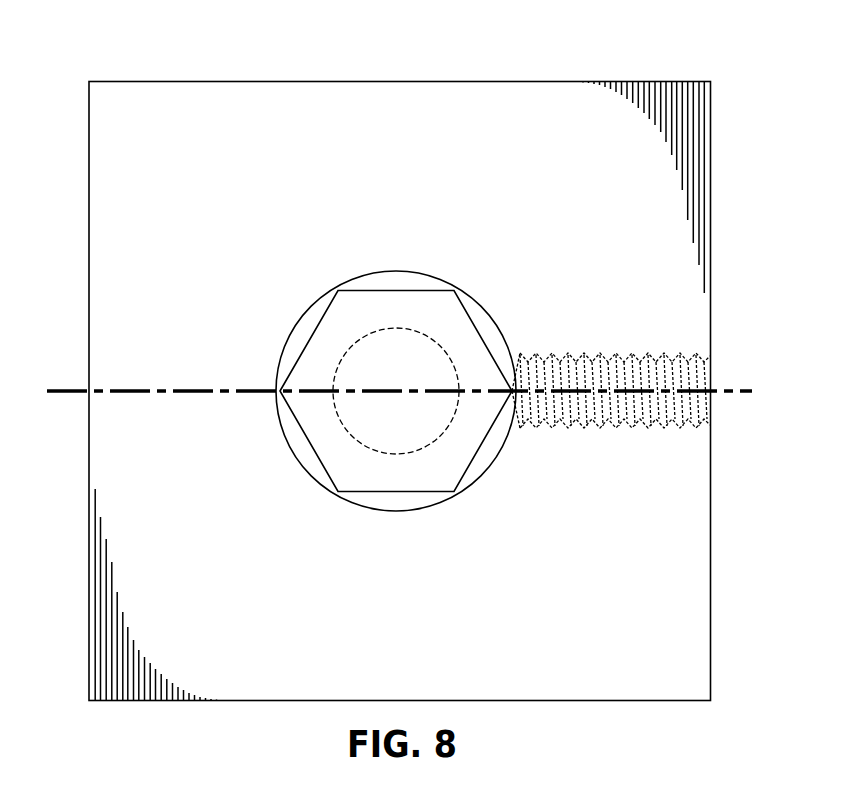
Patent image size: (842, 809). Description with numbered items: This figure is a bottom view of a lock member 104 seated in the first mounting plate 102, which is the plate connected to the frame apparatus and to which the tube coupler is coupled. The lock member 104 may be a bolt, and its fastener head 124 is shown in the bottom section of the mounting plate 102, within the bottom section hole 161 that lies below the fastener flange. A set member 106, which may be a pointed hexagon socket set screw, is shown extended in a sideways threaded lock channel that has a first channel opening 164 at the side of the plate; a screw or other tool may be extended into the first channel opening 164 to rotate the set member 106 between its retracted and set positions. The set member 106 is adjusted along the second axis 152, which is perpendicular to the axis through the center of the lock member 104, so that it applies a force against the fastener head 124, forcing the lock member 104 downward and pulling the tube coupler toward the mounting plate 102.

The first mounting plate 102 is at (135, 62).
The lock member 104 is at (415, 291).
The set member 106 is at (508, 345).
The fastener head 124 is at (374, 305).
The second axis 152 is at (58, 386).
The bottom section hole 161 is at (304, 325).
The first channel opening 164 is at (714, 403).